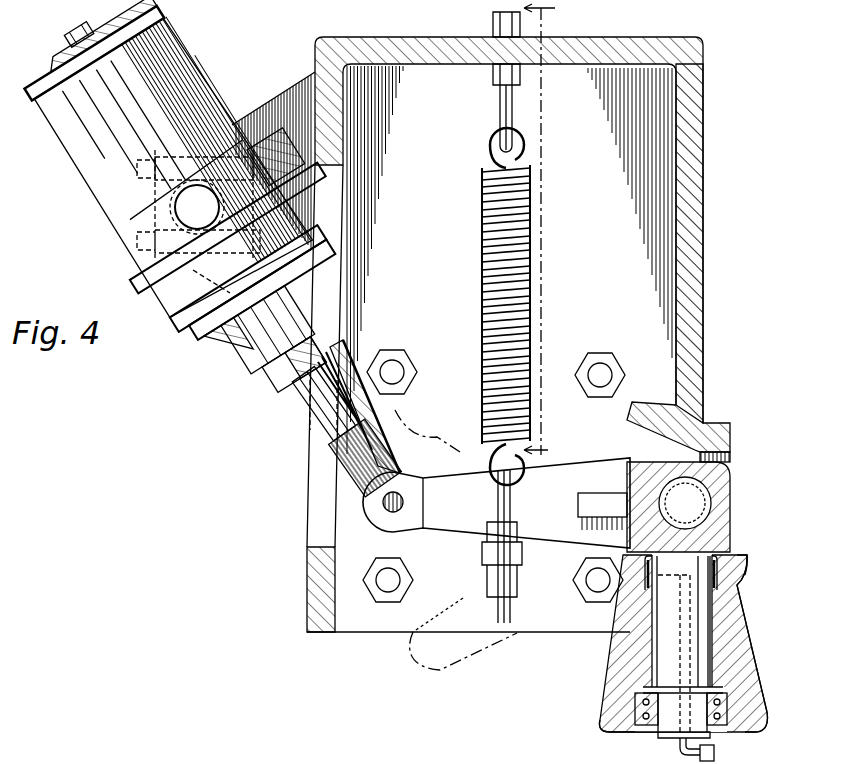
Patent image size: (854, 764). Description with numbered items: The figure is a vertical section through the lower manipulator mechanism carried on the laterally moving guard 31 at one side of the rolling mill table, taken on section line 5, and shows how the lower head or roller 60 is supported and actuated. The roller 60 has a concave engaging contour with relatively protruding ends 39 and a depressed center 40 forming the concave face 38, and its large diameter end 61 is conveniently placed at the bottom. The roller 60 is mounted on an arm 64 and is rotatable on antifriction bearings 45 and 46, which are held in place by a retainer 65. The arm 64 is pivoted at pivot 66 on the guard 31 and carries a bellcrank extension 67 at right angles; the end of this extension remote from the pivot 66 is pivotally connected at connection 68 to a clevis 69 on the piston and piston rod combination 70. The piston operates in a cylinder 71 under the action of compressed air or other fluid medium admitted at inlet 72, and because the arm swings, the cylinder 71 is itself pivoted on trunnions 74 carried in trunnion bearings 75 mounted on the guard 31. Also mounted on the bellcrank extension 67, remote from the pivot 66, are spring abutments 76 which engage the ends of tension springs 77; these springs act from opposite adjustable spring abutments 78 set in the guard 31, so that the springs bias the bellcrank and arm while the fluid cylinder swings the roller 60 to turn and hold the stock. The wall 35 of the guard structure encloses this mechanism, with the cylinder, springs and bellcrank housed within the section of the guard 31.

The section line 5 is at (476, 335).
The guard 31 is at (703, 258).
The housing side wall 35 is at (704, 168).
The concave face 38 is at (745, 600).
The protruding ends 39 is at (749, 559).
The depressed center 40 is at (750, 636).
The antifriction bearing 45 is at (735, 560).
The antifriction bearing 46 is at (646, 732).
The lower head or roller 60 is at (627, 657).
The large diameter end 61 is at (603, 716).
The arm 64 is at (667, 668).
The retainer 65 is at (708, 740).
The pivot 66 is at (735, 470).
The bellcrank extension 67 is at (572, 472).
The pivotal connection 68 is at (402, 496).
The clevis 69 is at (365, 458).
The piston and piston rod combination 70 is at (323, 403).
The cylinder 71 is at (209, 213).
The fluid admission 72 is at (78, 35).
The trunnions 74 is at (180, 212).
The trunnion bearings 75 is at (140, 248).
The spring abutments 76 is at (498, 494).
The tension springs 77 is at (482, 270).
The adjustable spring abutments 78 is at (500, 80).